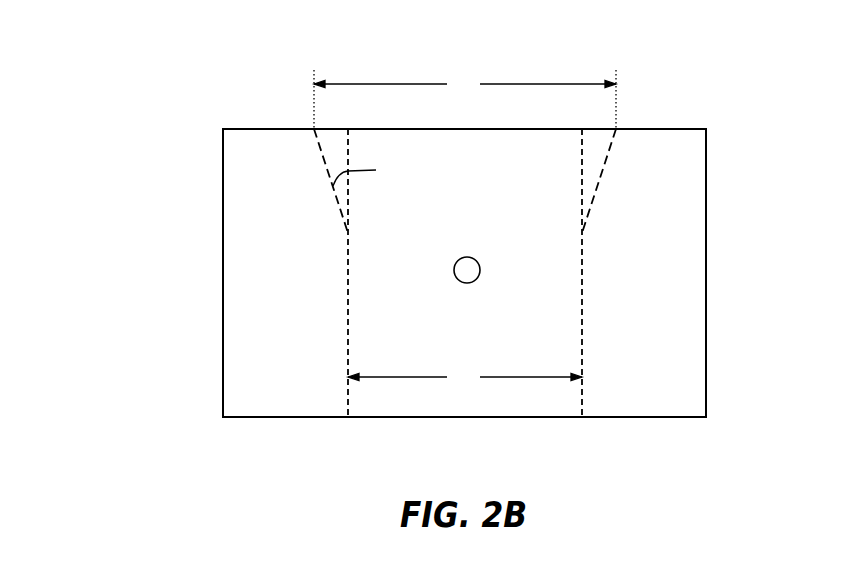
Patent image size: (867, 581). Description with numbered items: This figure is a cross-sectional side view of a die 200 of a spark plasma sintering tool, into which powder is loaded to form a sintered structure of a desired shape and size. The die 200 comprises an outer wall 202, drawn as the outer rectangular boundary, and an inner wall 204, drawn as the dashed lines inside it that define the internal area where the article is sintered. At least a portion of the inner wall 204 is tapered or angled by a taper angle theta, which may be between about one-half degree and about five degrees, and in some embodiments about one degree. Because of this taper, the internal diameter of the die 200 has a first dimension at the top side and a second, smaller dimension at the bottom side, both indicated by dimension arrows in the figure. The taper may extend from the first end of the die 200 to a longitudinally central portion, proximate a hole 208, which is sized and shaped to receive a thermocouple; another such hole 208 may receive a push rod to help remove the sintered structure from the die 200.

The die 200 is at (163, 68).
The outer wall 202 is at (706, 266).
The inner wall 204 is at (347, 317).
The hole 208 is at (480, 262).